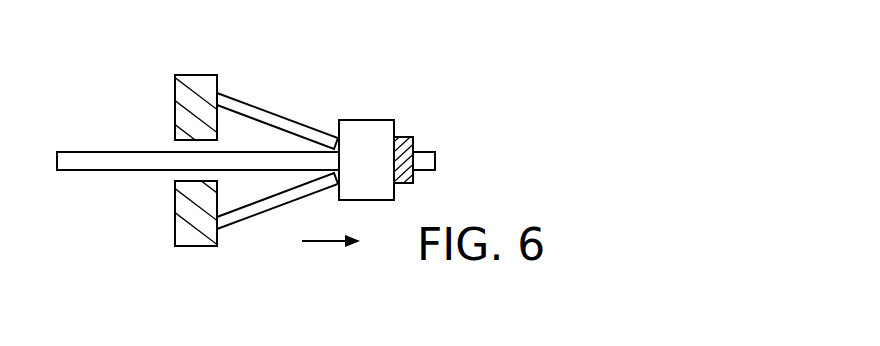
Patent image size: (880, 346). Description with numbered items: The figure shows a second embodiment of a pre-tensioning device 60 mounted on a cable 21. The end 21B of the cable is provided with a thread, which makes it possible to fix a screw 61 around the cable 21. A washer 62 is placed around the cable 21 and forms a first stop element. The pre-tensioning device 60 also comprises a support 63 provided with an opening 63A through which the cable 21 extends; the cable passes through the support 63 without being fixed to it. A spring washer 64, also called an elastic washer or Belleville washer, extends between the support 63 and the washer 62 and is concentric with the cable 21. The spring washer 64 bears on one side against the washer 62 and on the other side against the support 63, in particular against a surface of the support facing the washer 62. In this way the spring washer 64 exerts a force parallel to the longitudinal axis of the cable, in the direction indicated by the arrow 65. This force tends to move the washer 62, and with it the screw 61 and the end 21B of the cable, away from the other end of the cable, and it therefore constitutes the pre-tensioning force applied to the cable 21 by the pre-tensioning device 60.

The cable 21 is at (95, 162).
The end of the cable 21B is at (428, 183).
The pre-tensioning device 60 is at (282, 139).
The screw 61 is at (410, 140).
The washer 62 is at (367, 128).
The support 63 is at (200, 82).
The opening 63A is at (165, 136).
The spring washer 64 is at (267, 117).
The arrow 65 is at (323, 242).